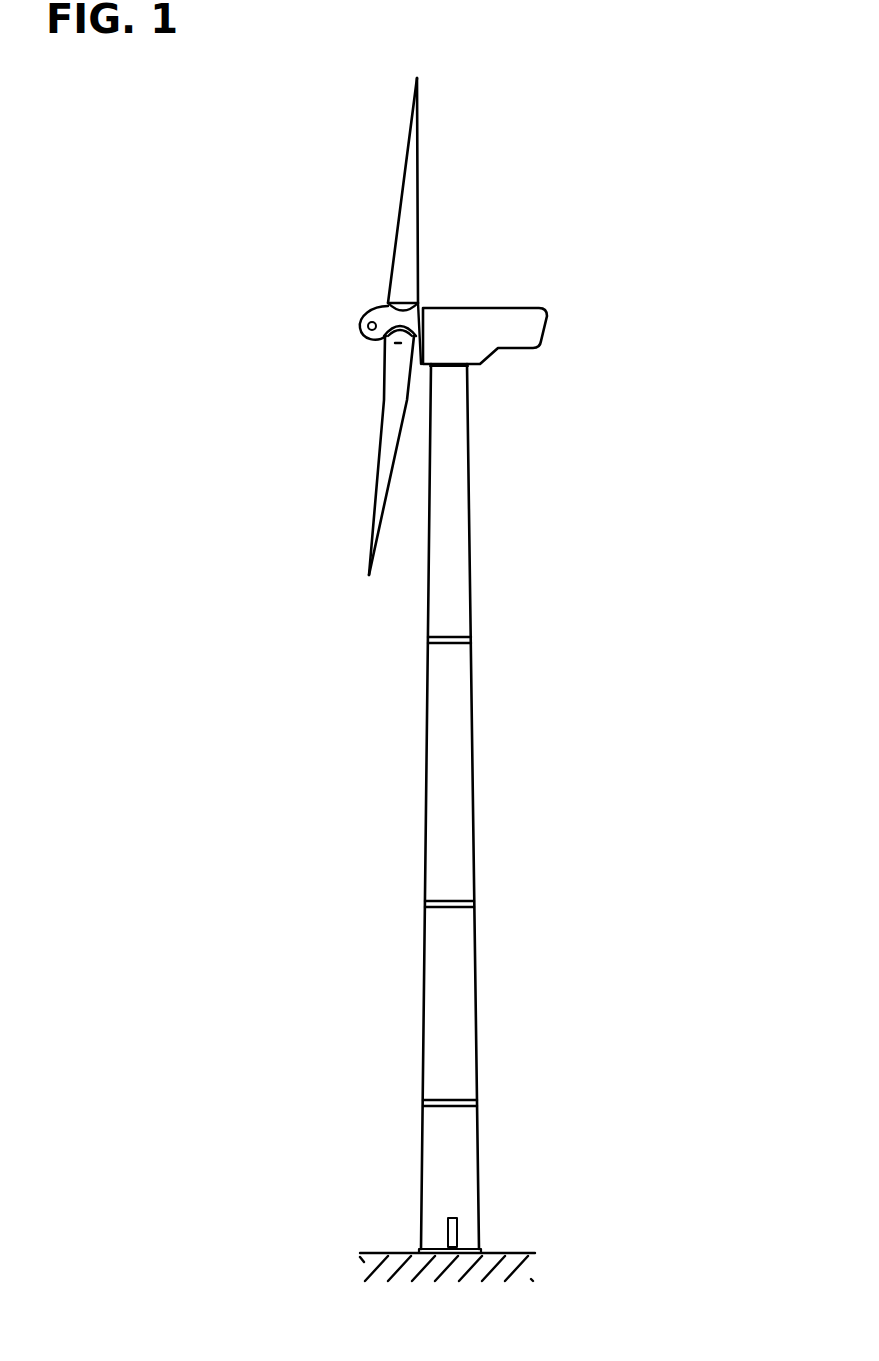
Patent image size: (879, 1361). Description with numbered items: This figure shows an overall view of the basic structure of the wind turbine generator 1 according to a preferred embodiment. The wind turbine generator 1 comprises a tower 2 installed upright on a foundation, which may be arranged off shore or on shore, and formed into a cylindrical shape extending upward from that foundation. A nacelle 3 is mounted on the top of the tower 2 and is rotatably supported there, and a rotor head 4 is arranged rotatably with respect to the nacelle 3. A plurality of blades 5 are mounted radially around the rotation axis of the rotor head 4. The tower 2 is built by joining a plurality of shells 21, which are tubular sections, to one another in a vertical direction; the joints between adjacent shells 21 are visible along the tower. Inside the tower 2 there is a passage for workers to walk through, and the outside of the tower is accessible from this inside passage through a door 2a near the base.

The wind turbine generator 1 is at (627, 309).
The tower 2 is at (472, 762).
The door 2a is at (452, 1232).
The shells 21 is at (470, 602).
The nacelle 3 is at (511, 307).
The rotor head 4 is at (384, 311).
The blades 5 is at (405, 168).